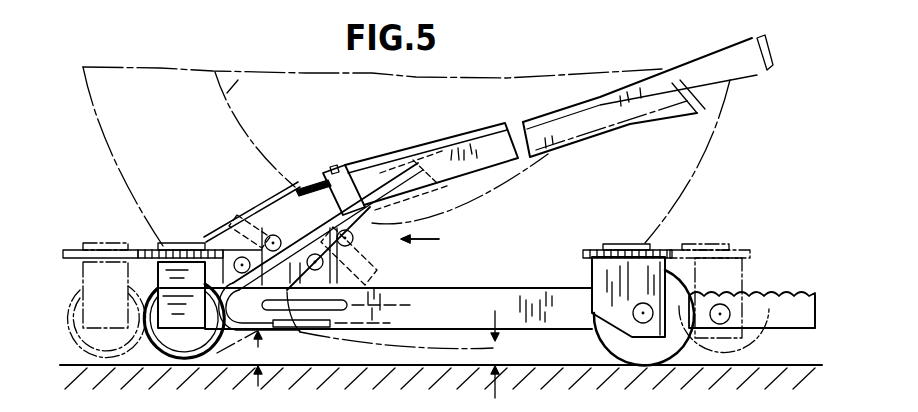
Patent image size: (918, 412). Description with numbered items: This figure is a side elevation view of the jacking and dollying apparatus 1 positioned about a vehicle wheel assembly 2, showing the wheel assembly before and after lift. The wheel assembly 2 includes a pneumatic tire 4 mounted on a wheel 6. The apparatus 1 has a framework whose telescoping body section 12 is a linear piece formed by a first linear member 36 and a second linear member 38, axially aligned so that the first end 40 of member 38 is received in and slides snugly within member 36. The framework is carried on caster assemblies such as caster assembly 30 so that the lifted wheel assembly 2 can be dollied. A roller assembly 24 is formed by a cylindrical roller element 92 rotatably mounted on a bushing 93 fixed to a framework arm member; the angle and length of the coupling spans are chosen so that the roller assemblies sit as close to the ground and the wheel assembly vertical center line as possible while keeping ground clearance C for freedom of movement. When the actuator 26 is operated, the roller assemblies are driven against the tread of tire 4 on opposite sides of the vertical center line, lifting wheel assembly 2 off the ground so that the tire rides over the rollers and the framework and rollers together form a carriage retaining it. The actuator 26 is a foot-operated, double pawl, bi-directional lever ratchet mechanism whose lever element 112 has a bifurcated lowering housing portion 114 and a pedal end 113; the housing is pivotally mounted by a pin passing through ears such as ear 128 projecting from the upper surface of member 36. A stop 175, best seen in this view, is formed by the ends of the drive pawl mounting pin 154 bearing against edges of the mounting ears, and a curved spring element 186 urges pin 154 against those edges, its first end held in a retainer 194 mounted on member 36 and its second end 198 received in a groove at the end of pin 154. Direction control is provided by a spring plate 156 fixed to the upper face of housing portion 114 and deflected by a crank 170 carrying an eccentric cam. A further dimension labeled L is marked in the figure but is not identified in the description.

The jacking and dollying apparatus 1 is at (118, 227).
The vehicle wheel assembly 2 is at (395, 142).
The pneumatic tire 4 is at (115, 170).
The wheel 6 is at (248, 73).
The telescoping body section 12 is at (459, 288).
The roller assembly 24 is at (143, 299).
The actuator 26 is at (434, 240).
The caster assembly 30 is at (688, 346).
The first linear member 36 is at (524, 306).
The second linear member 38 is at (774, 306).
The first end of second member 40 is at (818, 316).
The cylindrical roller element 92 is at (152, 345).
The bushing 93 is at (143, 316).
The lever element 112 is at (444, 147).
The pedal end 113 is at (690, 84).
The bifurcated lowering housing portion 114 is at (355, 165).
The lever mounting ear 128 is at (247, 242).
The drive pawl mounting pin 154 is at (298, 210).
The spring plate 156 is at (232, 217).
The crank 170 is at (305, 181).
The stop 175 is at (273, 233).
The curved spring element 186 is at (233, 304).
The retainer 194 is at (302, 340).
The second end of spring element 198 is at (333, 220).
The ground clearance C is at (264, 352).
The lift height L is at (503, 353).